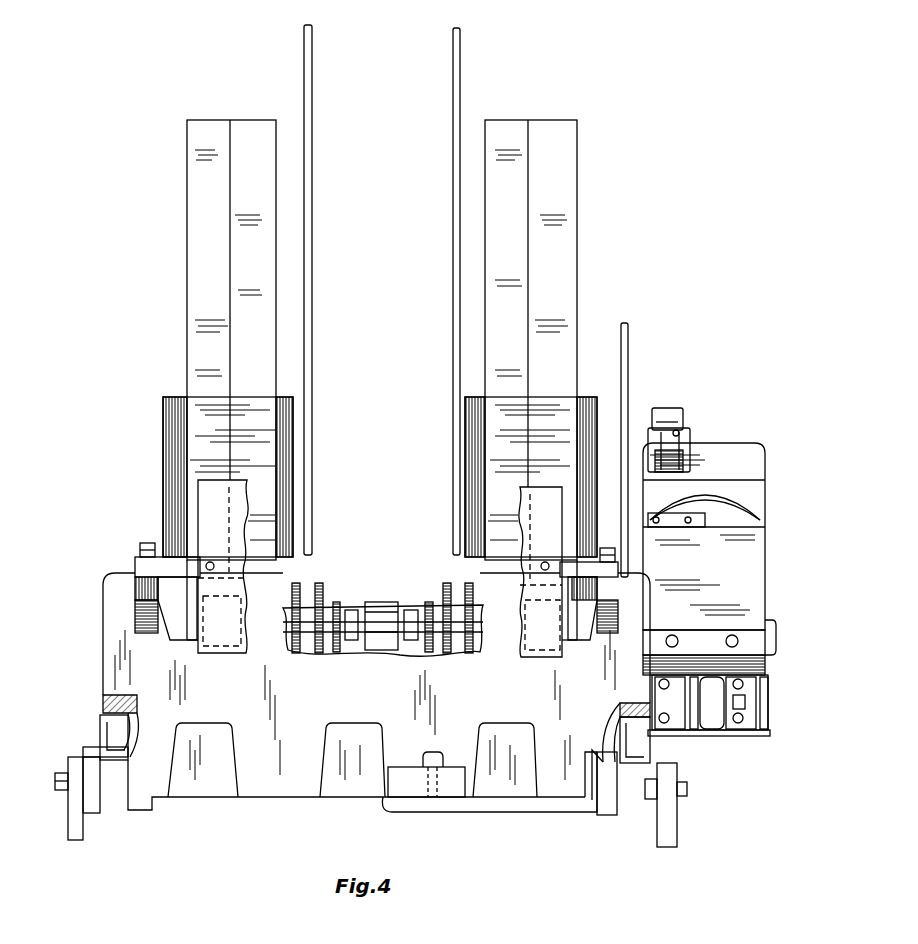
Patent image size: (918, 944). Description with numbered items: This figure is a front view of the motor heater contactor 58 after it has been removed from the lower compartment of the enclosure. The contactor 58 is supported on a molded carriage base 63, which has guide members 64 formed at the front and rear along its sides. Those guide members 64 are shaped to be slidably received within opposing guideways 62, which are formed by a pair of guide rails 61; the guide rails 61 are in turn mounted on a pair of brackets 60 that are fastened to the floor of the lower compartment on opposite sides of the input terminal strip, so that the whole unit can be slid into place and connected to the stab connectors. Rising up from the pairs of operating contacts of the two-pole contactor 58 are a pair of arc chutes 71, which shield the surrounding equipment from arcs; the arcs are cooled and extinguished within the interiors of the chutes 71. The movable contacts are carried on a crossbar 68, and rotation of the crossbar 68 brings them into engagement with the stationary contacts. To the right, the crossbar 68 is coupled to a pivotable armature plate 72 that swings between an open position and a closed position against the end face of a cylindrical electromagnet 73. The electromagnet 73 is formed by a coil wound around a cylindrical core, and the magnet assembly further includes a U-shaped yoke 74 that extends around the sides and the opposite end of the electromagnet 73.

The motor heater contactor 58 is at (628, 216).
The arc chutes 71 is at (276, 242).
The armature plate 72 is at (735, 573).
The U-shaped yoke 74 is at (745, 450).
The electromagnet 73 is at (748, 500).
The crossbar 68 is at (415, 612).
The molded carriage base 63 is at (275, 792).
The guideways 62 is at (628, 745).
The guide rails 61 is at (660, 753).
The guide members 64 is at (621, 745).
The brackets 60 is at (655, 805).